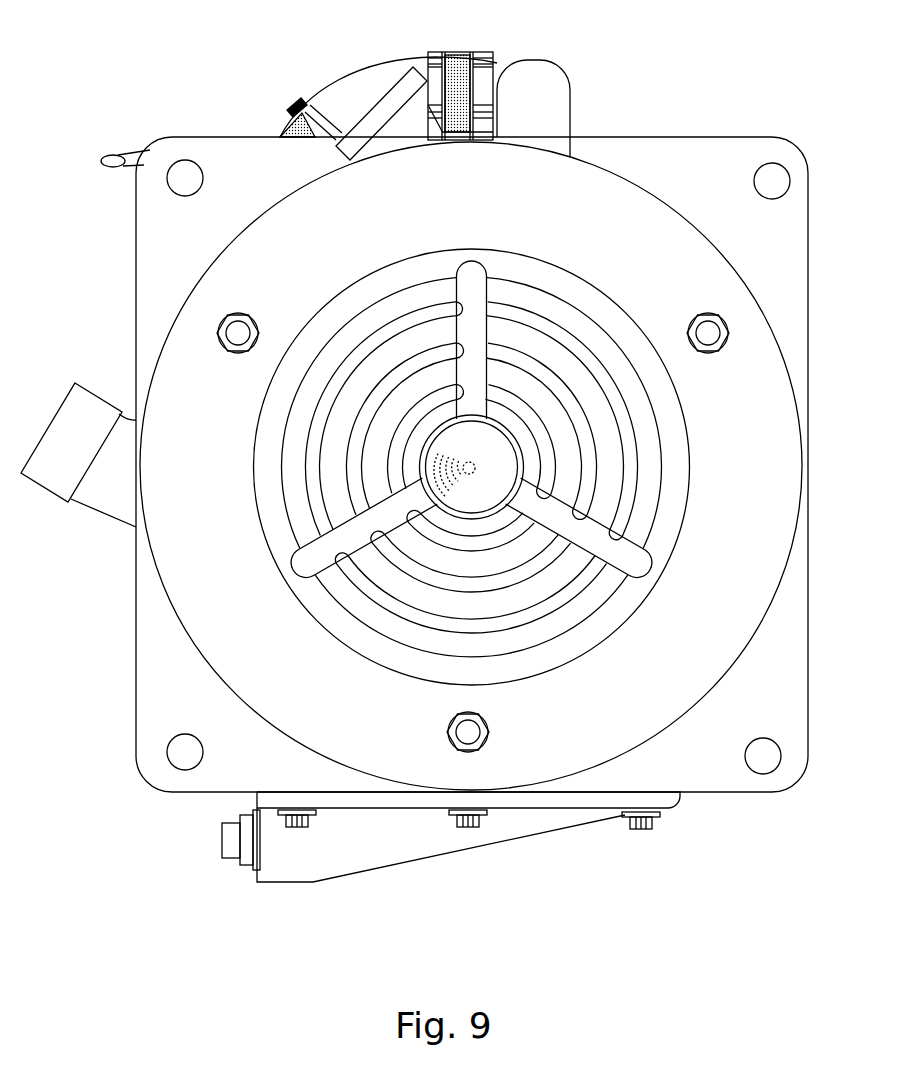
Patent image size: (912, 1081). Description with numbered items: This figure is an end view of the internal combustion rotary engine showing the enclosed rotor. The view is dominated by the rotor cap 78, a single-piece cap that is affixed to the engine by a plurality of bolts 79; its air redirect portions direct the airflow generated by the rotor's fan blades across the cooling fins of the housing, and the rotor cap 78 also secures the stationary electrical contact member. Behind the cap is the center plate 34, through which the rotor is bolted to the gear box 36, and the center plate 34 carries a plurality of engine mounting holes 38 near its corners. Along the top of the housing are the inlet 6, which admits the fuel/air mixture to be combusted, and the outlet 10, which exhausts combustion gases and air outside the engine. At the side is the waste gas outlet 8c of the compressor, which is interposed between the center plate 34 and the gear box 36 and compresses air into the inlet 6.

The inlet 6 is at (543, 92).
The outlet 10 is at (387, 92).
The center plate 34 is at (688, 133).
The engine mounting holes 38 is at (778, 185).
The rotor cap 78 is at (522, 283).
The bolts 79 is at (242, 312).
The waste gas outlet 8c is at (65, 478).
The gear box 36 is at (402, 835).